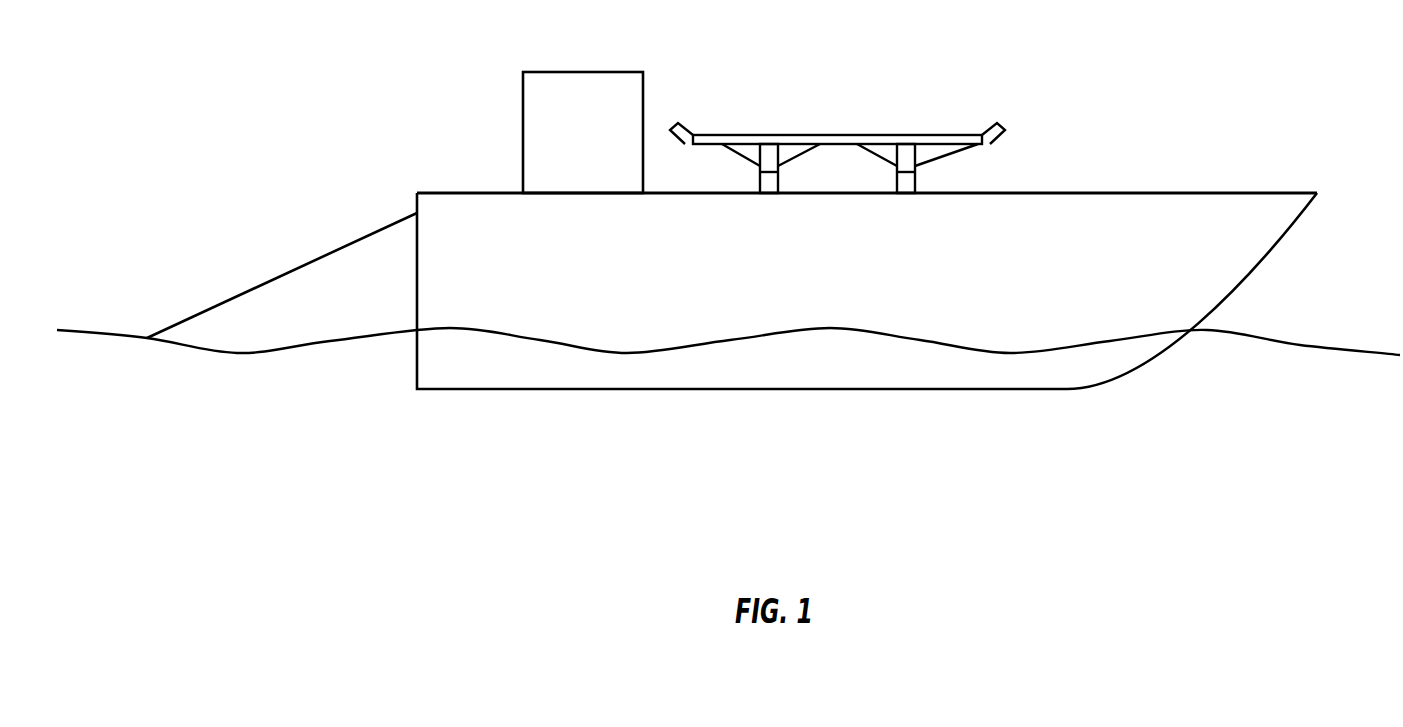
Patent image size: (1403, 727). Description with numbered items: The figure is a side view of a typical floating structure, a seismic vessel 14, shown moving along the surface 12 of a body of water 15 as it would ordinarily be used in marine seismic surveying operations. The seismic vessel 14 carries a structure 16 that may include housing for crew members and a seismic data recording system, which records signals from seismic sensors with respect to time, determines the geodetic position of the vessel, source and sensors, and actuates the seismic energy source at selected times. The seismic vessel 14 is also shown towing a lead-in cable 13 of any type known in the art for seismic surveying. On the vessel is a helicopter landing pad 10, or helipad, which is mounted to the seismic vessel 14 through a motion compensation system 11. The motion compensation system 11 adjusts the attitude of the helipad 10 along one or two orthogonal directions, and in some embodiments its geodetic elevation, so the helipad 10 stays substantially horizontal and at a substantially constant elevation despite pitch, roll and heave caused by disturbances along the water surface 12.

The helicopter landing pad 10 is at (838, 135).
The motion compensation system 11 is at (760, 178).
The surface of a body of water 12 is at (250, 354).
The lead-in cable 13 is at (313, 262).
The seismic vessel 14 is at (1162, 193).
The body of water 15 is at (878, 447).
The structure 16 is at (582, 72).